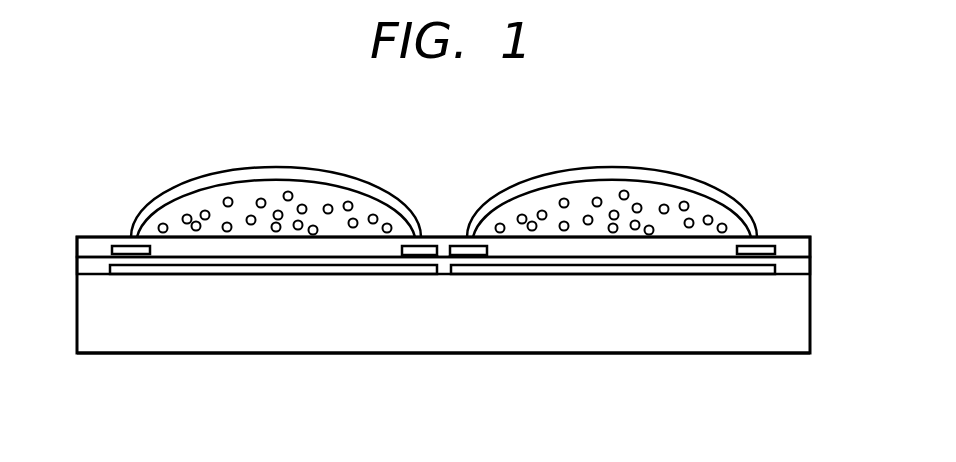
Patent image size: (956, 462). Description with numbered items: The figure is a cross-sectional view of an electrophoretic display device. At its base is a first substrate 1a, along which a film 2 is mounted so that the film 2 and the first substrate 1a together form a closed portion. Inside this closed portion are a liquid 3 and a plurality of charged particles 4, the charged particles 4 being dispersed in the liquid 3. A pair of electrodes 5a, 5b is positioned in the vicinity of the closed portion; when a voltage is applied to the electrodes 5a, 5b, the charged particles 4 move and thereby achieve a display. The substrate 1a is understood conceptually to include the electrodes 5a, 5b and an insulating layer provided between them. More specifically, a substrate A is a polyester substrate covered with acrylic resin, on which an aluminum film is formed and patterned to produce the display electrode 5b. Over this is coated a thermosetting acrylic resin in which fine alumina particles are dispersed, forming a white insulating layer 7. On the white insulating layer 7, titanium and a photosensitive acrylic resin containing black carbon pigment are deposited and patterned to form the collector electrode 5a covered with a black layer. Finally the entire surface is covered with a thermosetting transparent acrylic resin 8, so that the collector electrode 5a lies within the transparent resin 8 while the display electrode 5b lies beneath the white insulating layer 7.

The first substrate 1a is at (657, 353).
The film 2 is at (340, 182).
The liquid 3 is at (174, 212).
The charged particles 4 is at (205, 210).
The collector electrode 5a is at (123, 246).
The display electrode 5b is at (128, 276).
The white insulating layer 7 is at (792, 266).
The transparent acrylic resin 8 is at (792, 247).
The substrate A is at (537, 341).